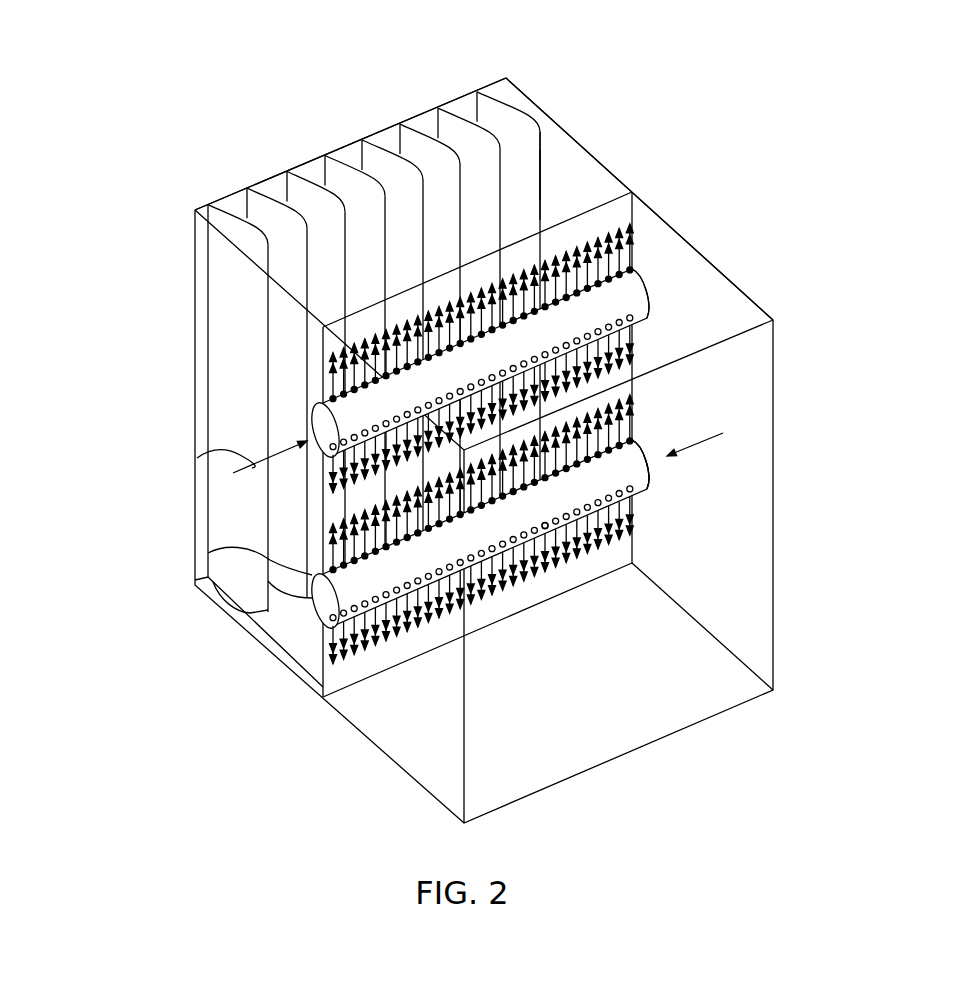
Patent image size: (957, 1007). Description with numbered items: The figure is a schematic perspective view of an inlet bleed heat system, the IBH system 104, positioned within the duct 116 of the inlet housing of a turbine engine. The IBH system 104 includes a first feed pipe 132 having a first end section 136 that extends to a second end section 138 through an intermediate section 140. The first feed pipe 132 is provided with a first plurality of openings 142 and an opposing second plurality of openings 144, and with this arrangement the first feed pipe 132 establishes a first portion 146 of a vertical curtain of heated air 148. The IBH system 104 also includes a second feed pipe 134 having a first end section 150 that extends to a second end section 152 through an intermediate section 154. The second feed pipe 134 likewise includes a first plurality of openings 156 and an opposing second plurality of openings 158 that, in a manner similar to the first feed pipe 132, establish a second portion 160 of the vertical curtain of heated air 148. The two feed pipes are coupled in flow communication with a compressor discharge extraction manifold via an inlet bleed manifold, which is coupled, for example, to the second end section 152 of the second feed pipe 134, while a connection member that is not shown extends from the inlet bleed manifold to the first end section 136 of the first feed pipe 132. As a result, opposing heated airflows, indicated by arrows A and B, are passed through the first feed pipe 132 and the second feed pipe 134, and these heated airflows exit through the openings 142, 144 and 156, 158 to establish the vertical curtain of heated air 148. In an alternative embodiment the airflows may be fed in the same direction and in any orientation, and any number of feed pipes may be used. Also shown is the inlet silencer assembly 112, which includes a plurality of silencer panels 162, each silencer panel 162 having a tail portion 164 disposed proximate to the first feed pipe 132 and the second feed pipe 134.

The IBH system 104 is at (861, 299).
The inlet silencer assembly 112 is at (545, 140).
The duct 116 is at (745, 295).
The first feed pipe 132 is at (297, 386).
The second feed pipe 134 is at (664, 428).
The first end section 136 is at (312, 419).
The second end section 138 is at (656, 280).
The intermediate section 140 is at (477, 367).
The first plurality of openings 142 is at (448, 347).
The second plurality of openings 144 is at (333, 446).
The first portion 146 is at (622, 208).
The vertical curtain of heated air 148 is at (512, 648).
The first end section 150 is at (208, 553).
The second end section 152 is at (660, 468).
The intermediate section 154 is at (550, 528).
The first plurality of openings 156 is at (657, 468).
The second plurality of openings 158 is at (320, 616).
The second portion 160 is at (331, 672).
The silencer panel 162 is at (524, 95).
The tail portion 164 is at (551, 170).
The arrow A is at (234, 457).
The arrow B is at (700, 432).